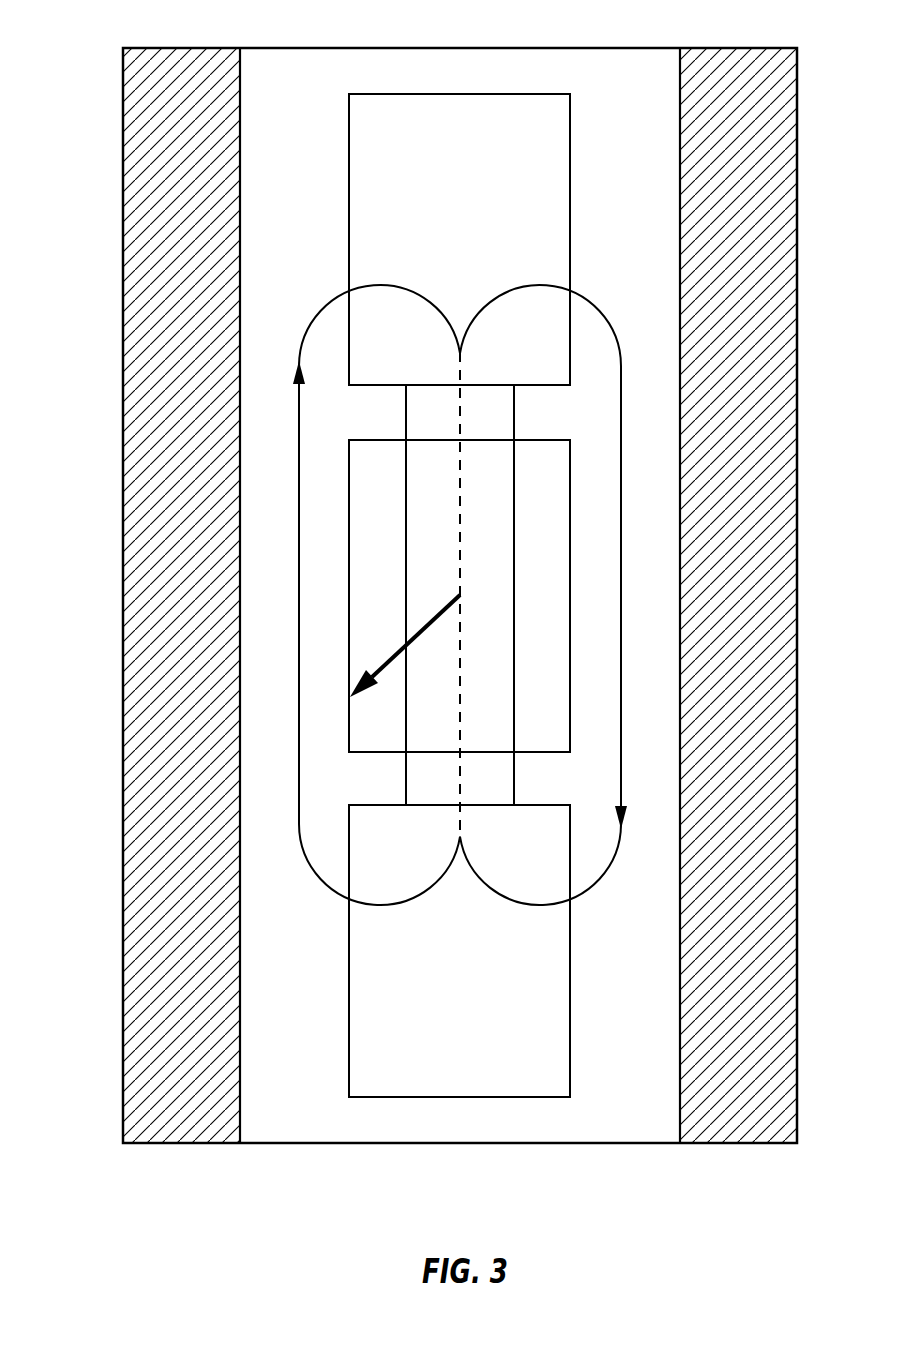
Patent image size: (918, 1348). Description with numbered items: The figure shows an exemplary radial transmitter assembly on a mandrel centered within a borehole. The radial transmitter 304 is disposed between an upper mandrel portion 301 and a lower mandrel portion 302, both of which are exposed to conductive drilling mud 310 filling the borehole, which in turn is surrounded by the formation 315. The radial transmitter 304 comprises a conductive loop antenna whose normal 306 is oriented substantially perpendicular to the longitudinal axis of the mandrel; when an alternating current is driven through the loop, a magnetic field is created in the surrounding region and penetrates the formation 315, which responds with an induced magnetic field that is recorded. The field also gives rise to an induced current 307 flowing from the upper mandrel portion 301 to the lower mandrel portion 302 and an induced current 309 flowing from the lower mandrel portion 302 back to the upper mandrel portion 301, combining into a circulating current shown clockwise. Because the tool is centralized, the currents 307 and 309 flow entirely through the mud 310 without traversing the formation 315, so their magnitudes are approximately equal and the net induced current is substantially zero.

The conductive drilling mud 310 is at (453, 60).
The formation 315 is at (140, 143).
The upper mandrel portion 301 is at (537, 94).
The lower mandrel portion 302 is at (572, 988).
The radial transmitter 304 is at (525, 753).
The normal 306 is at (393, 665).
The induced current 307 is at (592, 297).
The induced current 309 is at (335, 293).